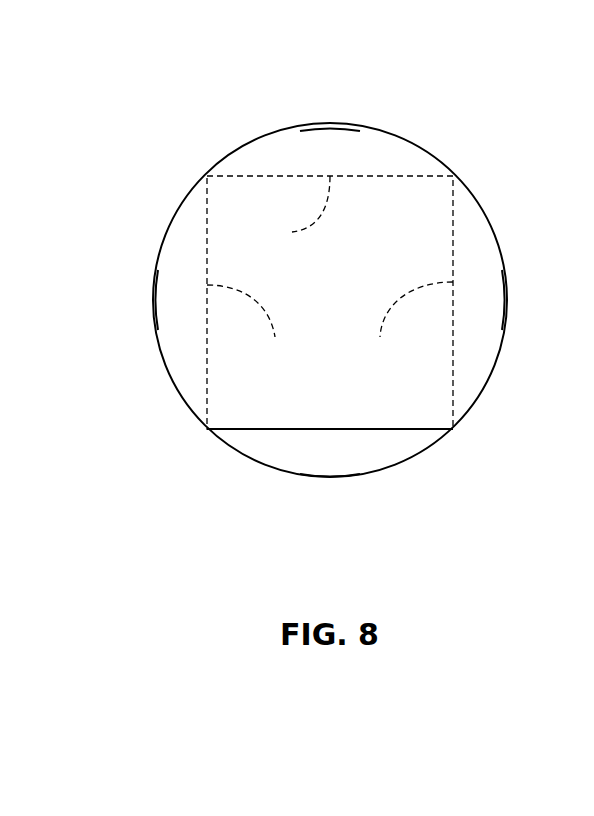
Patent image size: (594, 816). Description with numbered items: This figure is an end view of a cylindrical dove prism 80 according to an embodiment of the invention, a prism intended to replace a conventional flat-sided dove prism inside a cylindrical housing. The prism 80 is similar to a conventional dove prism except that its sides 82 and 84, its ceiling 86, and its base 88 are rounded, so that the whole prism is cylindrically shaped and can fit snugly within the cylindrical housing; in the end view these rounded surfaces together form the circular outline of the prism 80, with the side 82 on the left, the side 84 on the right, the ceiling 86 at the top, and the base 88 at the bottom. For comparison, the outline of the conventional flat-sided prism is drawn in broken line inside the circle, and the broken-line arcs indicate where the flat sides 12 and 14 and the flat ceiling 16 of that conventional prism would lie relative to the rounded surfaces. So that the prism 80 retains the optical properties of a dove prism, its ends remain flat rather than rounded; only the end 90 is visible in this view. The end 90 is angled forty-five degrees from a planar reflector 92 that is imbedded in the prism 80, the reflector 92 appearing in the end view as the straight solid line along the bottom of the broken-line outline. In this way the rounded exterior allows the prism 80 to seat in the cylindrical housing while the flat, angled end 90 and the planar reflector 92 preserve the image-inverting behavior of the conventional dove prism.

The cylindrical dove prism 80 is at (205, 122).
The side 82 is at (153, 302).
The side 84 is at (506, 298).
The ceiling 86 is at (330, 122).
The base 88 is at (328, 478).
The end 90 is at (400, 213).
The planar reflector 92 is at (272, 429).
The side 12 is at (249, 330).
The side 14 is at (411, 329).
The ceiling 16 is at (297, 212).